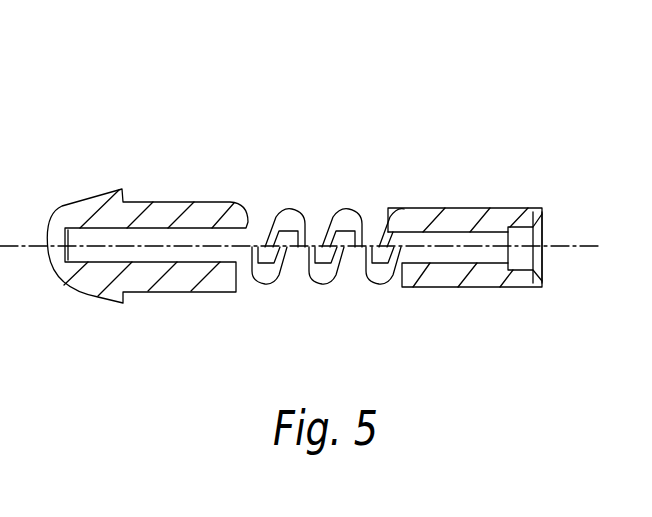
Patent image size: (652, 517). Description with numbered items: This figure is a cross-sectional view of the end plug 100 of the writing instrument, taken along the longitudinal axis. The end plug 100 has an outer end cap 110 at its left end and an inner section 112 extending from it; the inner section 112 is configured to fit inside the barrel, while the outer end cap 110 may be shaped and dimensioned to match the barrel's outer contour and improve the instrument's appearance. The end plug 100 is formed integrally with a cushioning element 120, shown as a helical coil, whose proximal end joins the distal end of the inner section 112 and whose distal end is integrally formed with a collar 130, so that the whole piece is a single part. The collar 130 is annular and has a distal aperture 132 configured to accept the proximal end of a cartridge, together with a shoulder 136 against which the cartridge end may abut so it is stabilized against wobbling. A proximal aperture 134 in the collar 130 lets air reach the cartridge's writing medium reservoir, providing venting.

The end plug 100 is at (506, 100).
The outer end cap 110 is at (73, 200).
The inner section 112 is at (173, 201).
The cushioning element 120 is at (290, 208).
The collar 130 is at (443, 208).
The distal aperture 132 is at (544, 262).
The proximal aperture 134 is at (373, 284).
The shoulder 136 is at (535, 208).